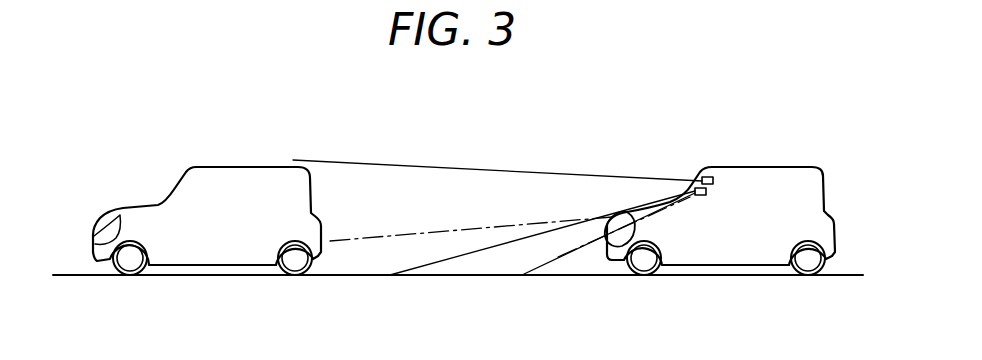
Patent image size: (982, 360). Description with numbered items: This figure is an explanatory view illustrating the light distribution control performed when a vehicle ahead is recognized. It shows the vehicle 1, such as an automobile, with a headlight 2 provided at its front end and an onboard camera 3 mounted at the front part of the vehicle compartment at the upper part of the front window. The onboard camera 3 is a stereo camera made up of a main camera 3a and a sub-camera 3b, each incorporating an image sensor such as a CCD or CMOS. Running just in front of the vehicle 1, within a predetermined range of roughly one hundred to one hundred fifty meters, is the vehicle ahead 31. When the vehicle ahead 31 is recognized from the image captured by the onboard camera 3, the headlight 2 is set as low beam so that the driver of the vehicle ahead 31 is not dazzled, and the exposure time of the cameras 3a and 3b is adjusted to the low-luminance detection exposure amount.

The vehicle 1 is at (791, 153).
The headlight 2 is at (633, 224).
The onboard camera 3 is at (739, 207).
The main camera 3a is at (713, 181).
The sub-camera 3b is at (753, 178).
The vehicle ahead 31 is at (276, 157).